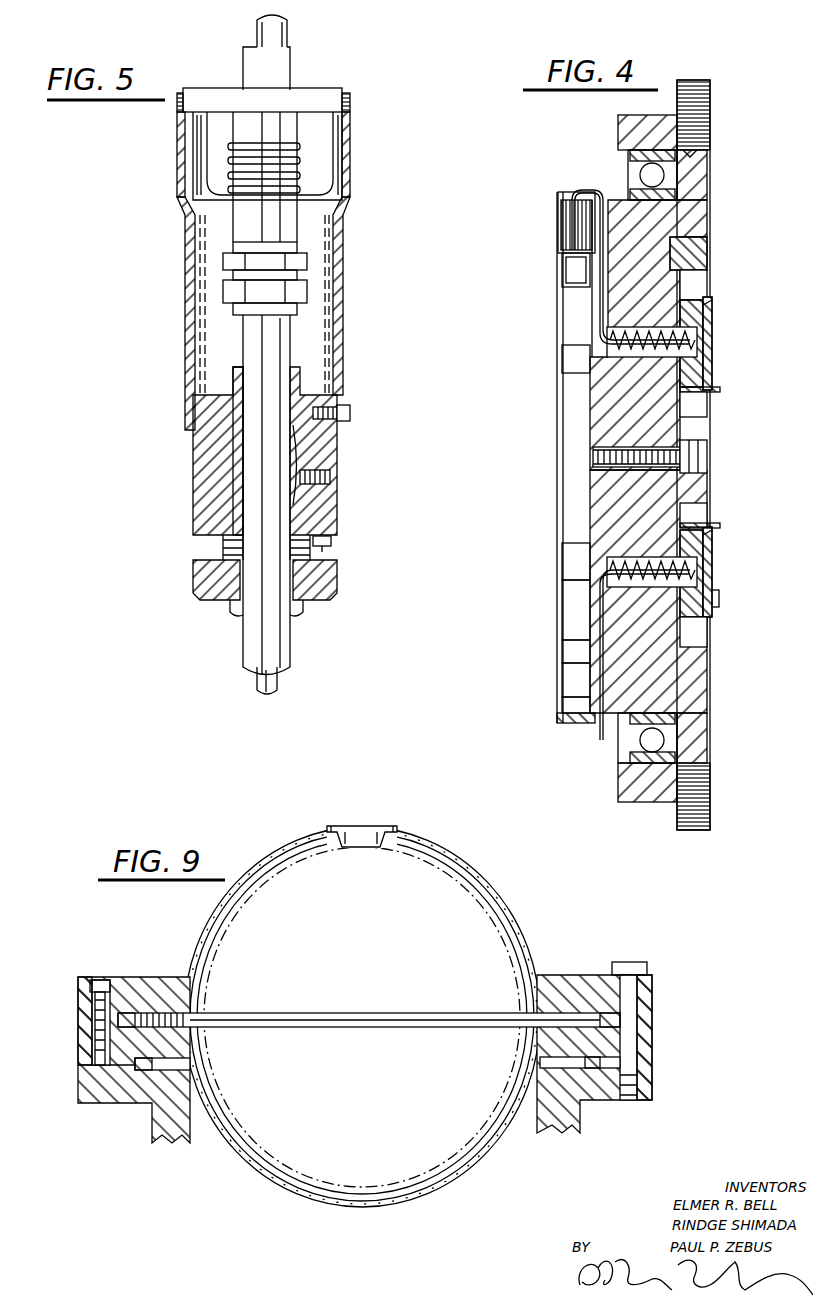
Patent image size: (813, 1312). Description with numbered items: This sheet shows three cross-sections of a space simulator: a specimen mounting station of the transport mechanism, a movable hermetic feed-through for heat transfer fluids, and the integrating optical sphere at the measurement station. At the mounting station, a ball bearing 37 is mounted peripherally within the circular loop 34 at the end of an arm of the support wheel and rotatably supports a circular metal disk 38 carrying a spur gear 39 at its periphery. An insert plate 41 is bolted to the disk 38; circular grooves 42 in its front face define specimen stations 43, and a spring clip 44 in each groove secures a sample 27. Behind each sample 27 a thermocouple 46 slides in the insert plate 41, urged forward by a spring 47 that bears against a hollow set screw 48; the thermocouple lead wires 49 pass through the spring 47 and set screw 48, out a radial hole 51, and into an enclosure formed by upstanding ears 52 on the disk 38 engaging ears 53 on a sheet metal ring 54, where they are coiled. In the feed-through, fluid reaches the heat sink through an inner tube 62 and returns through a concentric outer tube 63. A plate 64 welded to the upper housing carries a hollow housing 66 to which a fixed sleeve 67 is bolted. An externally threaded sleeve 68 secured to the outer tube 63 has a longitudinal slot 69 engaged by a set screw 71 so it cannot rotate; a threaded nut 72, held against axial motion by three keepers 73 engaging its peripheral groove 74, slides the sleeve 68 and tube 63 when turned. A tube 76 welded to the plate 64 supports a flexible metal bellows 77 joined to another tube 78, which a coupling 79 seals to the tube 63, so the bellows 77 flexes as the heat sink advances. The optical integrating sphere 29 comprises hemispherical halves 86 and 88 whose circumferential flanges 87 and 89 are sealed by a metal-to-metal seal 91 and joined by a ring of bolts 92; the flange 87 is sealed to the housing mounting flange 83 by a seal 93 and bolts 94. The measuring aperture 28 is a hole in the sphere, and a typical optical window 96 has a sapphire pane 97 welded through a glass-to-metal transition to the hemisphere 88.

In FIG. 4, the sample 27 is at (712, 372).
In FIG. 9, the measuring aperture 28 is at (367, 1207).
In FIG. 9, the optical integrating sphere 29 is at (457, 1188).
In FIG. 4, the circular loop 34 is at (627, 803).
In FIG. 4, the ball bearing 37 is at (617, 755).
In FIG. 4, the circular metal disk 38 is at (704, 212).
In FIG. 4, the spur gear 39 is at (710, 120).
In FIG. 4, the insert plate 41 is at (700, 250).
In FIG. 4, the circular groove 42 is at (697, 410).
In FIG. 4, the specimen station 43 is at (707, 397).
In FIG. 4, the spring clip 44 is at (698, 523).
In FIG. 4, the thermocouple 46 is at (713, 353).
In FIG. 4, the spring 47 is at (713, 318).
In FIG. 4, the hollow set screw 48 is at (673, 295).
In FIG. 4, the thermocouple lead wires 49 is at (562, 213).
In FIG. 4, the radial hole 51 is at (597, 313).
In FIG. 4, the upstanding ears 52 is at (578, 640).
In FIG. 4, the upstanding ears 53 is at (565, 673).
In FIG. 4, the sheet metal ring 54 is at (558, 267).
In FIG. 5, the inner tube 62 is at (258, 682).
In FIG. 5, the outer tube 63 is at (246, 645).
In FIG. 5, the plate 64 is at (202, 90).
In FIG. 5, the hollow housing 66 is at (343, 268).
In FIG. 5, the fixed sleeve 67 is at (202, 476).
In FIG. 5, the externally threaded sleeve 68 is at (237, 432).
In FIG. 5, the longitudinal slot 69 is at (298, 462).
In FIG. 5, the set screw 71 is at (333, 477).
In FIG. 5, the threaded nut 72 is at (195, 580).
In FIG. 5, the keeper 73 is at (327, 540).
In FIG. 5, the peripheral groove 74 is at (224, 547).
In FIG. 5, the tube 76 is at (297, 135).
In FIG. 5, the flexible metal bellows 77 is at (300, 164).
In FIG. 5, the tube 78 is at (233, 226).
In FIG. 5, the coupling 79 is at (224, 294).
In FIG. 9, the circular mounting flange 83 is at (650, 1077).
In FIG. 9, the hemispherical half 86 is at (493, 1150).
In FIG. 9, the circumferential flange 87 is at (640, 1043).
In FIG. 9, the hemispherical half 88 is at (437, 857).
In FIG. 9, the circumferential flange 89 is at (650, 993).
In FIG. 9, the metal-to-metal seal 91 is at (134, 1013).
In FIG. 9, the bolts 92 is at (100, 980).
In FIG. 9, the metal-to-metal seal 93 is at (607, 1067).
In FIG. 9, the bolts 94 is at (622, 962).
In FIG. 9, the optical window 96 is at (385, 827).
In FIG. 9, the sapphire pane 97 is at (363, 843).